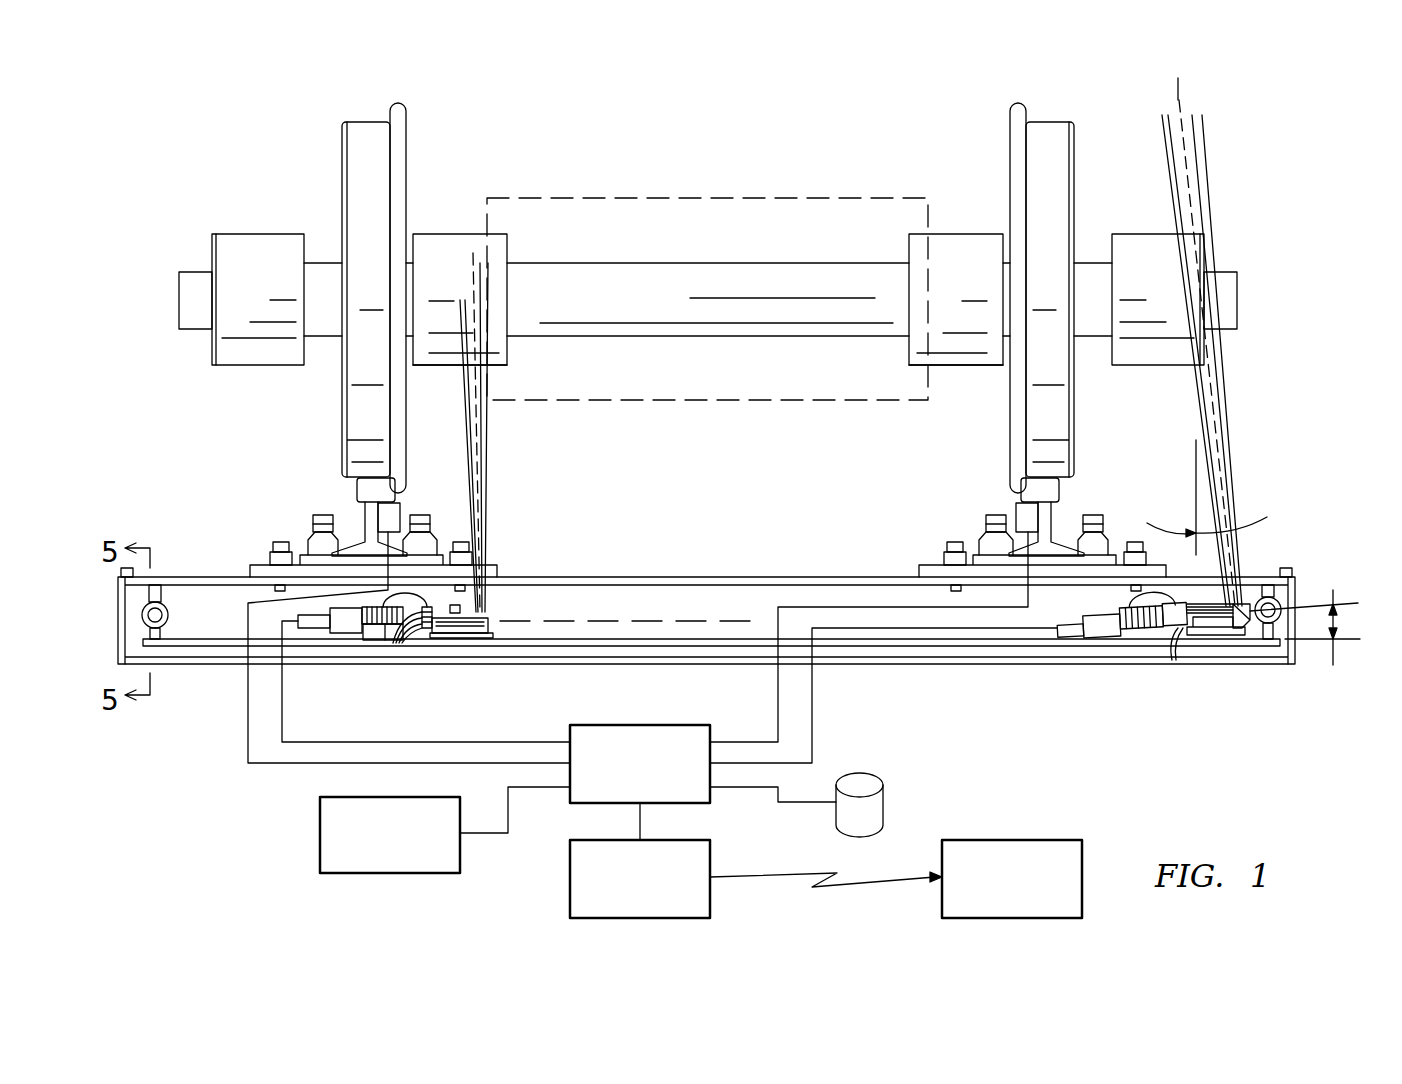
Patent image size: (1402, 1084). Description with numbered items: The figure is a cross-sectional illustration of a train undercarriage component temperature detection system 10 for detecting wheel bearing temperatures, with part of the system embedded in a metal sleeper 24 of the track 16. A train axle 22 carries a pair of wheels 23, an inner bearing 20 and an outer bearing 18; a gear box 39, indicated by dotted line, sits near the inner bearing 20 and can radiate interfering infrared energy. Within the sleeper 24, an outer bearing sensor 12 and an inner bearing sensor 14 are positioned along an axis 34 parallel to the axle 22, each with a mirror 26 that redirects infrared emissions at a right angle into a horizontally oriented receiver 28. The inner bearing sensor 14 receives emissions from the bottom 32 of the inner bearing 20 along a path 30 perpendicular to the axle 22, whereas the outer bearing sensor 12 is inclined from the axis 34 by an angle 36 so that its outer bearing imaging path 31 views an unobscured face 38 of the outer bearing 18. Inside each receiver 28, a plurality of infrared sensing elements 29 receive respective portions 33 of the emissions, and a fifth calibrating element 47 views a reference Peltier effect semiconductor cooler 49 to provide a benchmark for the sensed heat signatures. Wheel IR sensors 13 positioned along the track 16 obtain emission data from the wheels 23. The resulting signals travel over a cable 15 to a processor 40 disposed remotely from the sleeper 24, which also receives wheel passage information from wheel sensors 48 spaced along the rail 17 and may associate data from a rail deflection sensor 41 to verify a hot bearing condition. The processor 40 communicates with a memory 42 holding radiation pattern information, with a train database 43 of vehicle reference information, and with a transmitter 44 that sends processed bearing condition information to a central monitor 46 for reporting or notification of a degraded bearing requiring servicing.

The train undercarriage component temperature detection system 10 is at (248, 795).
The outer bearing sensor 12 is at (1137, 645).
The wheel IR sensor 13 is at (900, 628).
The inner bearing sensor 14 is at (427, 645).
The cable 15 is at (494, 742).
The track 16 is at (735, 533).
The rail 17 is at (353, 500).
The outer bearing 18 is at (262, 366).
The inner bearing 20 is at (443, 234).
The train axle 22 is at (737, 263).
The wheel 23 is at (405, 134).
The sleeper 24 is at (193, 577).
The mirror 26 is at (493, 631).
The receiver 28 is at (363, 633).
The infrared sensing element 29 is at (397, 645).
The path 30 is at (482, 434).
The outer bearing imaging path 31 is at (1180, 92).
The bottom 32 is at (445, 366).
The portions of IR emissions 33 is at (487, 510).
The axis 34 is at (683, 621).
The angle 36 is at (1332, 597).
The face 38 is at (1200, 262).
The gear box 39 is at (708, 198).
The processor 40 is at (677, 803).
The rail deflection sensor 41 is at (1017, 505).
The memory 42 is at (378, 873).
The train database 43 is at (883, 797).
The transmitter 44 is at (570, 864).
The central monitor 46 is at (1018, 840).
The calibrating element 47 is at (440, 600).
The wheel sensor 48 is at (403, 506).
The reference Peltier effect semiconductor cooler 49 is at (460, 601).